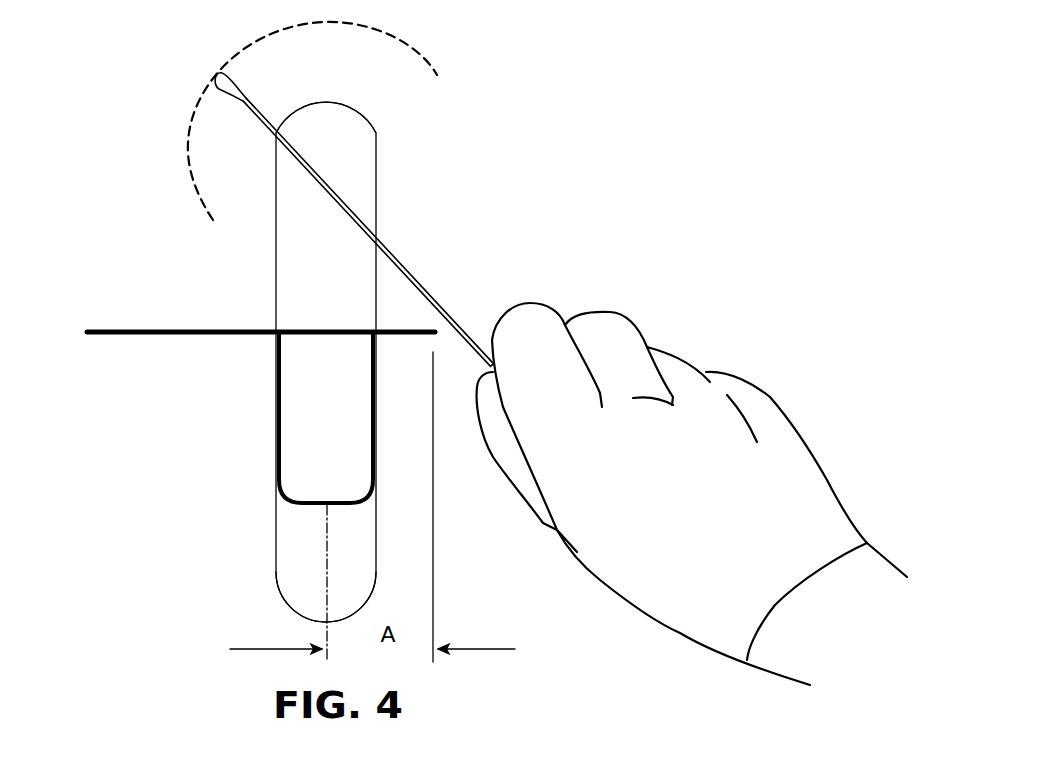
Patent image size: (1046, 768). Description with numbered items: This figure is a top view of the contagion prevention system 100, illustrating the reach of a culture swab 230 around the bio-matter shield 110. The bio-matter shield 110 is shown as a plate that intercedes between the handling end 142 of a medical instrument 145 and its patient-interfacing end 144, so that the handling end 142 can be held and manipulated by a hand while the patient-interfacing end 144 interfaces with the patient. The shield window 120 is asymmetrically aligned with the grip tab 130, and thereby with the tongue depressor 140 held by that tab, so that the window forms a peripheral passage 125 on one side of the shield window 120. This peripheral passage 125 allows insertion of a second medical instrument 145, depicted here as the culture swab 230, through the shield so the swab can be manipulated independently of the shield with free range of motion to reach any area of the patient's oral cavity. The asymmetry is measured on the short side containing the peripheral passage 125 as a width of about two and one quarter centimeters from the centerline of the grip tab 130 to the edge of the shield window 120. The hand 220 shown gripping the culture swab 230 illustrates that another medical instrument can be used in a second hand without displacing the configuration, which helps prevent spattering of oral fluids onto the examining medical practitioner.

The contagion prevention system 100 is at (520, 166).
The bio-matter shield 110 is at (150, 346).
The shield window 120 is at (225, 328).
The peripheral passage 125 is at (450, 360).
The grip tab 130 is at (278, 415).
The tongue depressor 140 is at (277, 236).
The handling end 142 is at (267, 586).
The patient-interfacing end 144 is at (393, 141).
The medical instrument 145 is at (262, 289).
The hand 220 is at (801, 383).
The culture swab 230 is at (410, 275).